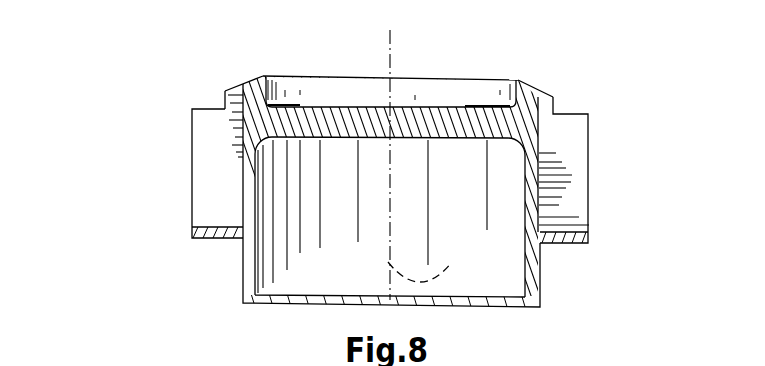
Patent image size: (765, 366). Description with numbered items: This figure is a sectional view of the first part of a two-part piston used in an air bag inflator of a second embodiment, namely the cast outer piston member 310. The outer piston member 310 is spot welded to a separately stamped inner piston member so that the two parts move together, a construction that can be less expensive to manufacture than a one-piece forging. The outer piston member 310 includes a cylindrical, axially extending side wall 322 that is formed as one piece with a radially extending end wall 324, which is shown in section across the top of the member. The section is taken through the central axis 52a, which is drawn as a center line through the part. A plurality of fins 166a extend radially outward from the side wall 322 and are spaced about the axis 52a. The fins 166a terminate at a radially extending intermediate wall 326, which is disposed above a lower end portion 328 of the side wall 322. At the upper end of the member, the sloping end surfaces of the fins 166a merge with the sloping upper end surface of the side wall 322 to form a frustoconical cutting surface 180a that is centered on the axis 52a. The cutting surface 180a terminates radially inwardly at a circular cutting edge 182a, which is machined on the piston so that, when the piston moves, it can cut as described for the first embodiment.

The outer piston member 310 is at (128, 191).
The side wall 322 is at (243, 180).
The end wall 324 is at (435, 120).
The cutting edge 182a is at (262, 76).
The cutting surface 180a is at (522, 82).
The fins 166a is at (190, 208).
The intermediate wall 326 is at (567, 242).
The lower end portion 328 is at (538, 292).
The axis 52a is at (436, 266).